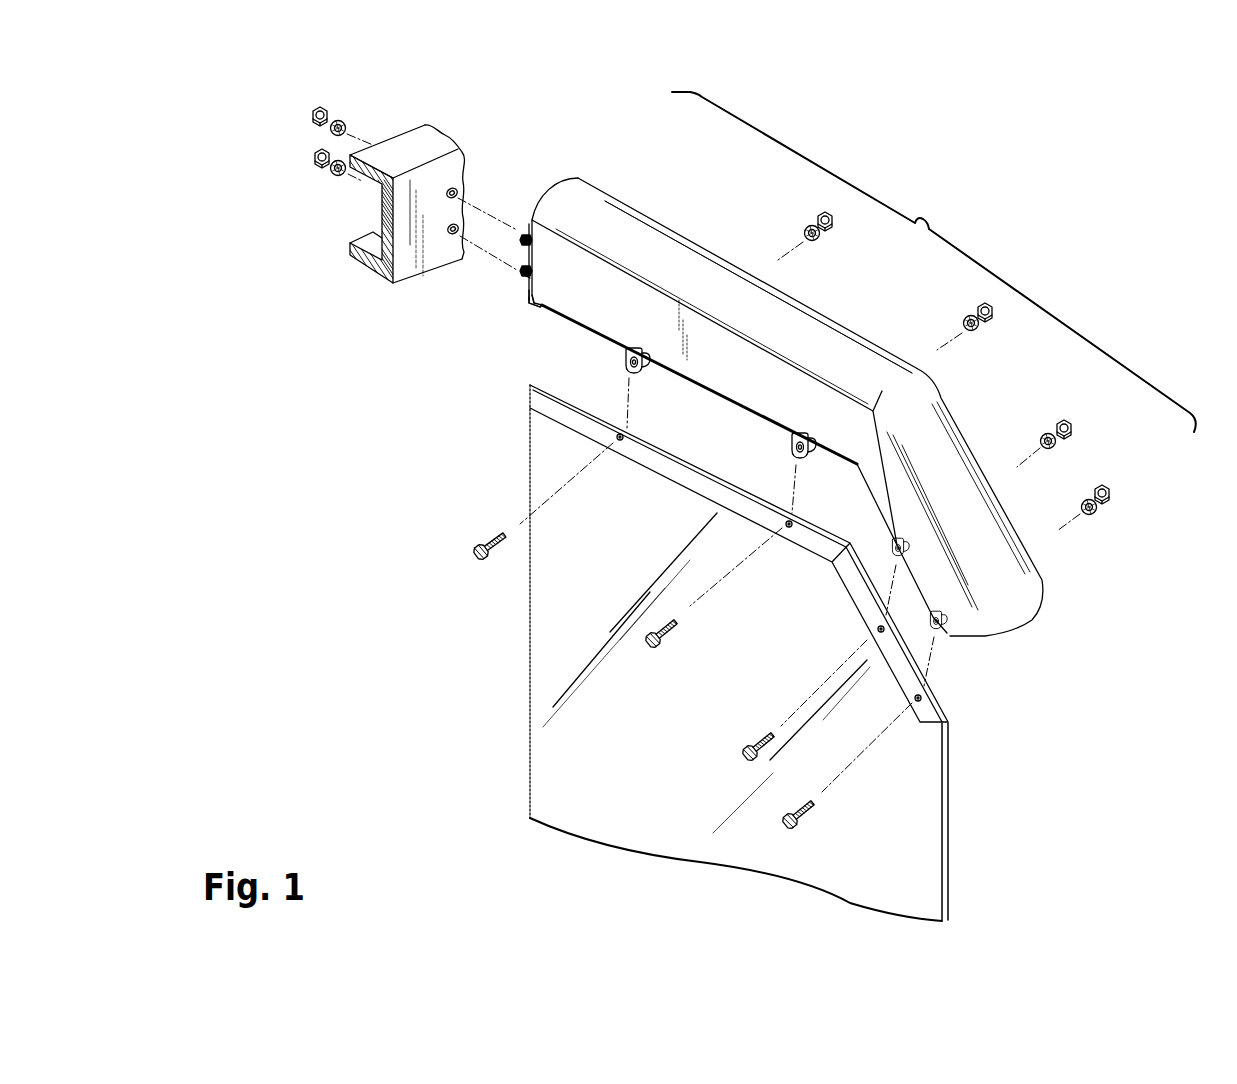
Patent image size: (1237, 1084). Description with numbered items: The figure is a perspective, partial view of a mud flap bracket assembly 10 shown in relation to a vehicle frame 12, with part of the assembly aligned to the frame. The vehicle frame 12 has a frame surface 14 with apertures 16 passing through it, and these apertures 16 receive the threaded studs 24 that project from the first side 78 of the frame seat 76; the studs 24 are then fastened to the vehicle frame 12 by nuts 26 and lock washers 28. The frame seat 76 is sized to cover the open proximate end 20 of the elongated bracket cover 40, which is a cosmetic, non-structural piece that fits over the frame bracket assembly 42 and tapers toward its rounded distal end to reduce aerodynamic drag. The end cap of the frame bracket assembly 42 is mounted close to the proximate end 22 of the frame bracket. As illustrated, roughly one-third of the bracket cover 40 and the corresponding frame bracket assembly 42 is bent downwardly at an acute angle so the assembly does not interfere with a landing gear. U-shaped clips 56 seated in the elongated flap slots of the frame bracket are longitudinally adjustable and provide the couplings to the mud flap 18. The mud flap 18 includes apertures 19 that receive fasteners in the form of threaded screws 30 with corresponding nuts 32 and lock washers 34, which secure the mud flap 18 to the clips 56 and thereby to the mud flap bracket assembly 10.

The mud flap bracket assembly 10 is at (934, 262).
The vehicle frame 12 is at (428, 203).
The frame surface 14 is at (458, 165).
The apertures 16 is at (472, 200).
The mud flap 18 is at (568, 748).
The apertures 19 is at (621, 441).
The open proximate end 20 is at (556, 180).
The proximate end 22 is at (536, 306).
The threaded studs 24 is at (518, 270).
The nuts 26 is at (314, 152).
The lock washers 28 is at (345, 126).
The threaded screws 30 is at (473, 551).
The nuts 32 is at (820, 213).
The lock washers 34 is at (806, 229).
The elongated bracket cover 40 is at (846, 318).
The frame bracket assembly 42 is at (710, 402).
The U-shaped clips 56 is at (624, 361).
The frame seat 76 is at (518, 300).
The first side 78 is at (518, 278).